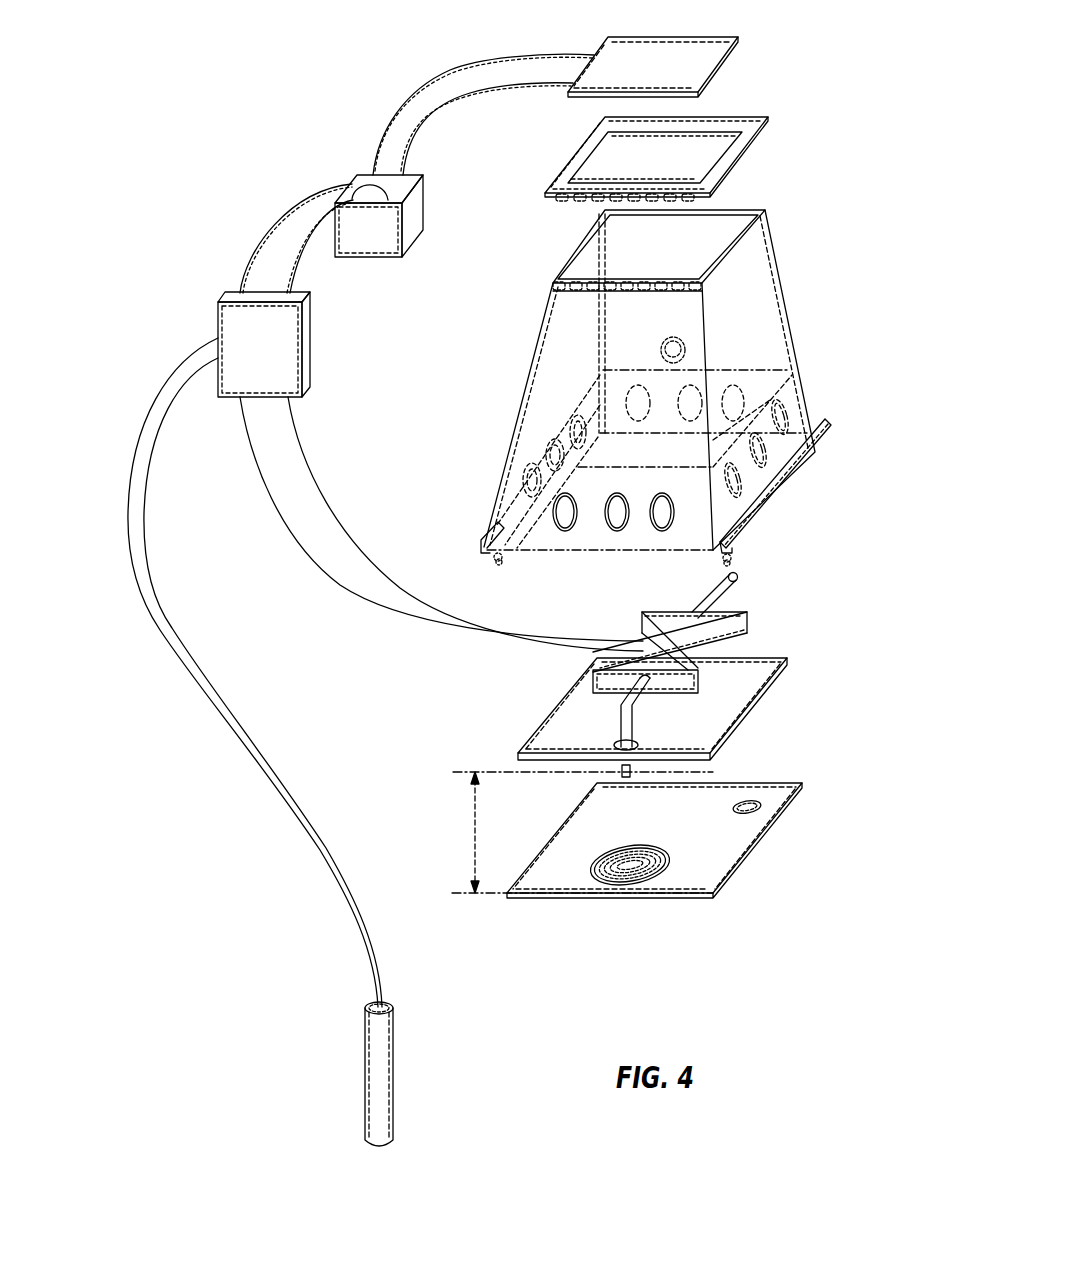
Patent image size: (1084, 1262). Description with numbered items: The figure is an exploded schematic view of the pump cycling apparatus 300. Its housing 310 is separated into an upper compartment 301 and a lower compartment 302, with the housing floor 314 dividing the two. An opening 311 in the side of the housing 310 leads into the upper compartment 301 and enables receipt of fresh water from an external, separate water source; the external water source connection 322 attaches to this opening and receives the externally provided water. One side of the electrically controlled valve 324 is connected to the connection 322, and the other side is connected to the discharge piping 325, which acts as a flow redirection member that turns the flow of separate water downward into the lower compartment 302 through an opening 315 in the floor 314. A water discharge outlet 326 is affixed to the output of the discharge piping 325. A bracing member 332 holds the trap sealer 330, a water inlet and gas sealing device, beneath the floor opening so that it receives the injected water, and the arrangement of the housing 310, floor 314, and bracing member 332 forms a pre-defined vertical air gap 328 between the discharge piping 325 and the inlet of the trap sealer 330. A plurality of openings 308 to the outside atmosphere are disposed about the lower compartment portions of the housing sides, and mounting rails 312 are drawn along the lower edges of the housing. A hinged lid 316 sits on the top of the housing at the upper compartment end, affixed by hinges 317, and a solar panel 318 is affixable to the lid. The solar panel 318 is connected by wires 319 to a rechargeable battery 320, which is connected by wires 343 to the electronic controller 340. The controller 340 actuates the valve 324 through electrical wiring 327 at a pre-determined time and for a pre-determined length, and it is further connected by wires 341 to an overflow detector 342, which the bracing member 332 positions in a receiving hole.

The pump cycling apparatus 300 is at (200, 50).
The upper compartment 301 is at (724, 350).
The lower compartment 302 is at (578, 541).
The openings 308 is at (784, 434).
The housing 310 is at (534, 336).
The opening 311 is at (661, 350).
The mounting rails 312 is at (813, 458).
The housing floor 314 is at (557, 743).
The opening 315 is at (634, 742).
The hinged lid 316 is at (574, 154).
The hinges 317 is at (578, 280).
The solar panel 318 is at (634, 81).
The wires 319 is at (478, 93).
The rechargeable battery 320 is at (347, 247).
The external water source connection 322 is at (737, 583).
The electrically controlled valve 324 is at (666, 614).
The discharge piping 325 is at (619, 715).
The water discharge outlet 326 is at (625, 778).
The electrical wiring 327 is at (474, 624).
The air gap 328 is at (474, 830).
The trap sealer 330 is at (621, 884).
The bracing member 332 is at (686, 853).
The electronic controller 340 is at (237, 363).
The wires 341 is at (165, 417).
The overflow detector 342 is at (364, 1080).
The wires 343 is at (313, 230).